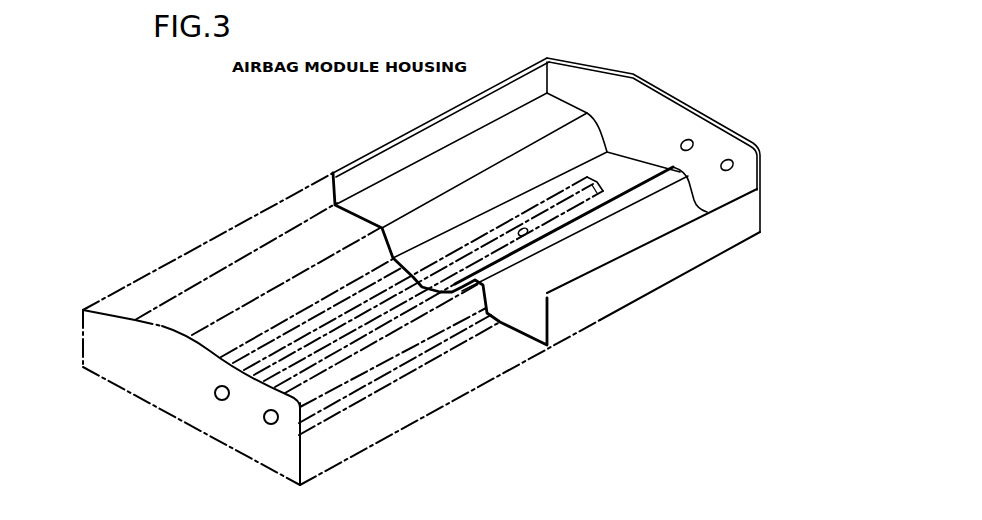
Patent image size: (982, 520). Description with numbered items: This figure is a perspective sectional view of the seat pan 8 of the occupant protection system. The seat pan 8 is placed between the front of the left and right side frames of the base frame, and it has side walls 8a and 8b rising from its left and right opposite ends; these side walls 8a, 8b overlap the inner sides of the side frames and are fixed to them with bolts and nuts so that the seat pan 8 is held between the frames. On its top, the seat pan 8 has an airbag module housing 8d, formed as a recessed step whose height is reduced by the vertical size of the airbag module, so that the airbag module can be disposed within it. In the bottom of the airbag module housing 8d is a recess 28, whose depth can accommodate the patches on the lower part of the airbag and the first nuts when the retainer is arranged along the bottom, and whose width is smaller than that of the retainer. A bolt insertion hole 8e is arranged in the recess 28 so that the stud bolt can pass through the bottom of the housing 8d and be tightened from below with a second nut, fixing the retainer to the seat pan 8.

The seat pan 8 is at (283, 167).
The side wall 8a is at (194, 395).
The side wall 8b is at (630, 80).
The airbag module housing 8d is at (418, 253).
The bolt insertion hole 8e is at (531, 233).
The recess 28 is at (550, 217).